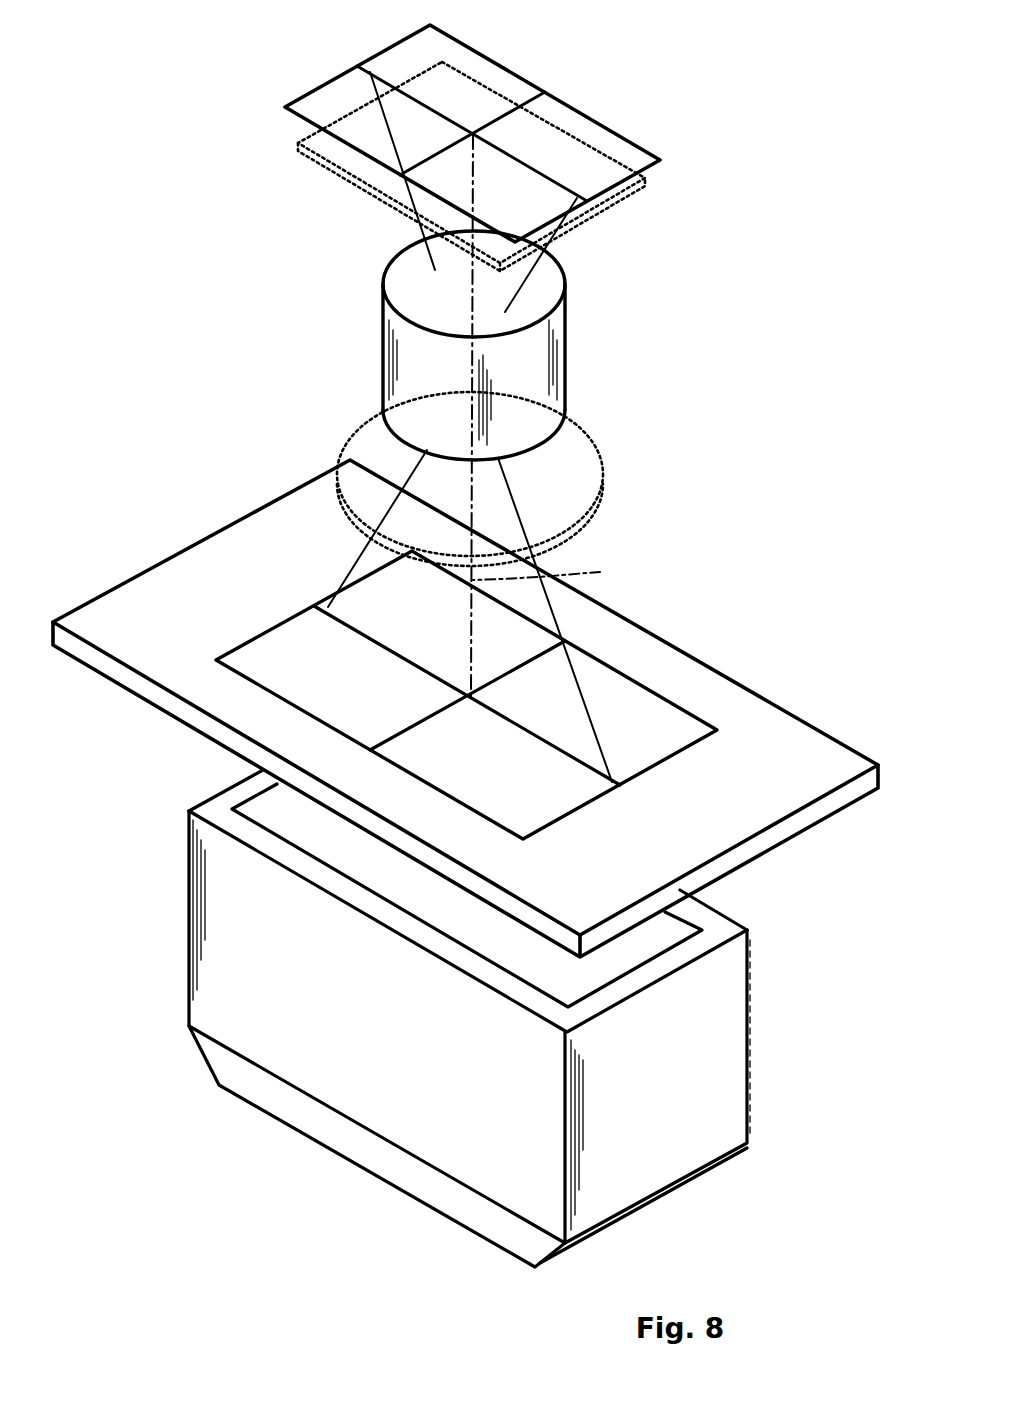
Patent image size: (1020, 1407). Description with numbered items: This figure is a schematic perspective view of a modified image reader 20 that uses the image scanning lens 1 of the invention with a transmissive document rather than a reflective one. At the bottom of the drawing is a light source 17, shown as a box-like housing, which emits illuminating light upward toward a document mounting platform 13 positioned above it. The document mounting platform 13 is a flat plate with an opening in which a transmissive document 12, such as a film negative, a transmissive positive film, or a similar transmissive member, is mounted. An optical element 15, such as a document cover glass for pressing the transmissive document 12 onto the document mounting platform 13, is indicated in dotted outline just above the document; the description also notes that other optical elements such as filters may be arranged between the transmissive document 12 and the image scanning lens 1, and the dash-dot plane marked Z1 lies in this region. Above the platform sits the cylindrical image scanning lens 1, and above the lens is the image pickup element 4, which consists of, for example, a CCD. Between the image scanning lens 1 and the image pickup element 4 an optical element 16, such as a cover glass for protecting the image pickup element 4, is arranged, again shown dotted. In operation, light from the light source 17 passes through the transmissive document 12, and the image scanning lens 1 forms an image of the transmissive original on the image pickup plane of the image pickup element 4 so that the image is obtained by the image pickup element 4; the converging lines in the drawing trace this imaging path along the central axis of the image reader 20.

The image reader 20 is at (238, 58).
The image pickup element 4 is at (607, 146).
The optical element 16 is at (610, 213).
The image scanning lens 1 is at (544, 376).
The optical element 15 is at (606, 467).
The image plane Z1 is at (556, 576).
The transmissive document 12 is at (658, 710).
The document mounting platform 13 is at (790, 828).
The light source 17 is at (210, 947).